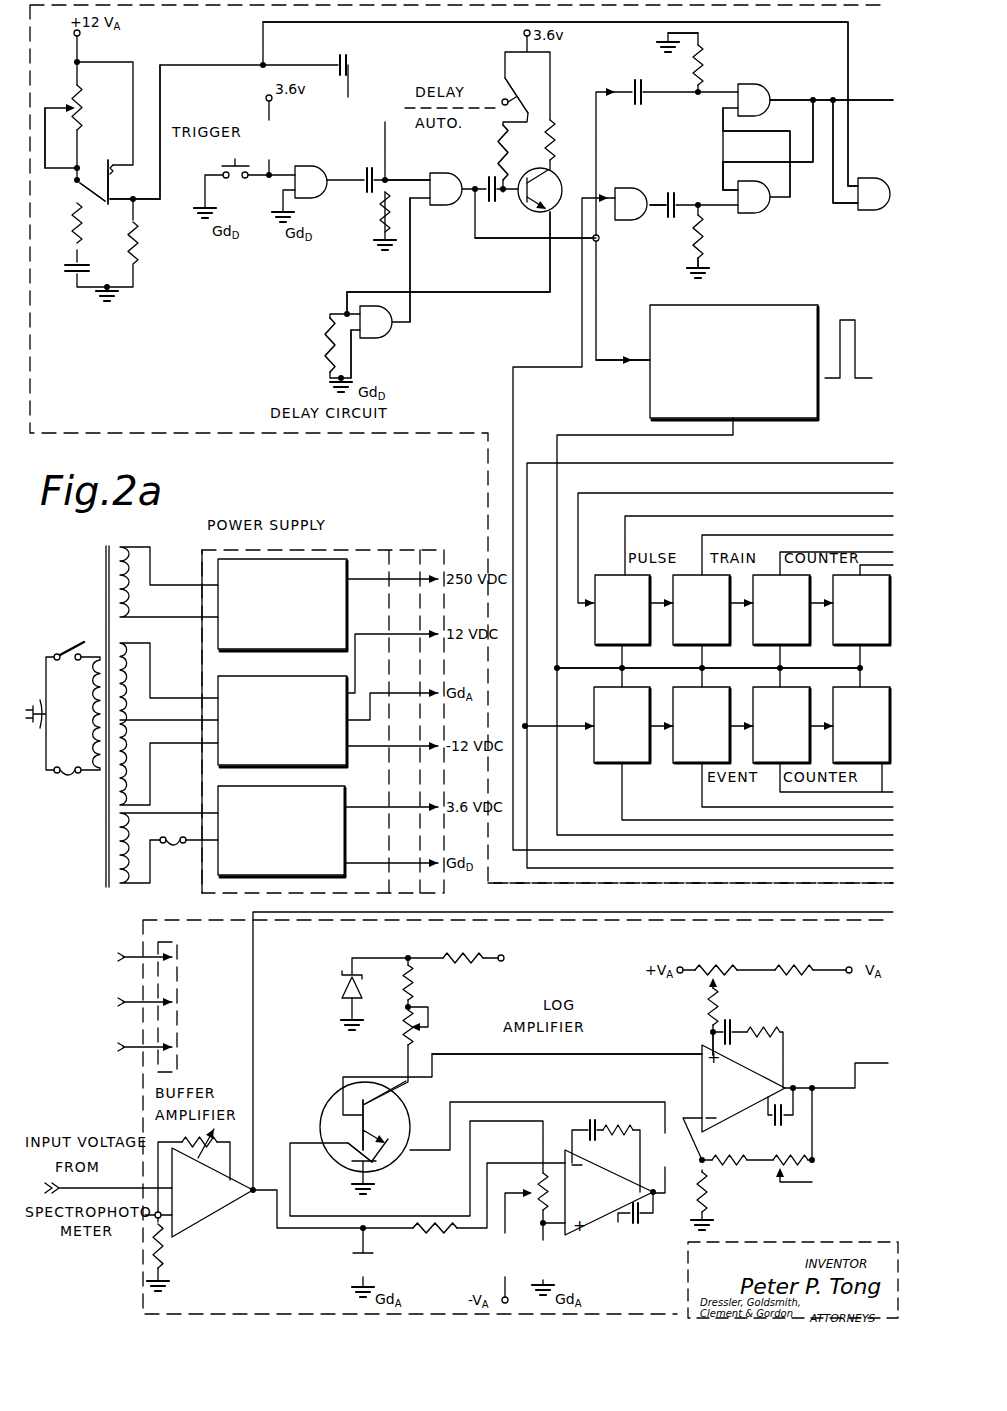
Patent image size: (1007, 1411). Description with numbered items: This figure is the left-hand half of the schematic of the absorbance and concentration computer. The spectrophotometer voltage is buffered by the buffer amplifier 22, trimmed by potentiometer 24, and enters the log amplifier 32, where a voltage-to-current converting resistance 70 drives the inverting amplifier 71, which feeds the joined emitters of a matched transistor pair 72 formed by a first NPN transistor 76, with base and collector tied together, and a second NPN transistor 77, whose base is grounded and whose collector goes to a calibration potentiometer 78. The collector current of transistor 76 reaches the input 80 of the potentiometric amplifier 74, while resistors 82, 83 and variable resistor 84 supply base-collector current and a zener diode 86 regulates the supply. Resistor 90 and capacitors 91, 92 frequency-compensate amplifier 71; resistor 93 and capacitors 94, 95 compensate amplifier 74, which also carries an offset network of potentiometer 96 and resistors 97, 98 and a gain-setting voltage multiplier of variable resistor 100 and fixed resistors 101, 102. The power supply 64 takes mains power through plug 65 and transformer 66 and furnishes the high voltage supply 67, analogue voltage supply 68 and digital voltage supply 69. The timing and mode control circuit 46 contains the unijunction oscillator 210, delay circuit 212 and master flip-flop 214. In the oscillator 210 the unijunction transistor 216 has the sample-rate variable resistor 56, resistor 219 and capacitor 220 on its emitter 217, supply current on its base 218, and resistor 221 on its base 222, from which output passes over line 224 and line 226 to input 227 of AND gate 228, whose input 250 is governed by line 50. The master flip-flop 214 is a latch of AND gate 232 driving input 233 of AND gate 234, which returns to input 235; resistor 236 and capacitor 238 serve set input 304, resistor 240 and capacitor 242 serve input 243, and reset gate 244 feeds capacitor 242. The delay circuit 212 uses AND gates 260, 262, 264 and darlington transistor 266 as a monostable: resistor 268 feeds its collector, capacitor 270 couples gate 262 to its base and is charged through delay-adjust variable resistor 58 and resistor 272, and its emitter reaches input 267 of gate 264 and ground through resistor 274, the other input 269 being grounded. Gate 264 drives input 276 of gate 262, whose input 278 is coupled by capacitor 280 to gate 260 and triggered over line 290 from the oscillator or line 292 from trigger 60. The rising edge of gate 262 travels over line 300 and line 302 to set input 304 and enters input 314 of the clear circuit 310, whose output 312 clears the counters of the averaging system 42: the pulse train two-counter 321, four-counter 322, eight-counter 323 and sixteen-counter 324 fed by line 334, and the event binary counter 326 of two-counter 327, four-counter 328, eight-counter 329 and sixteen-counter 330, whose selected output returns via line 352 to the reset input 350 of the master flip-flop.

The buffer amplifier 22 is at (210, 1206).
The potentiometer 24 is at (218, 1138).
The log amplifier 32 is at (582, 1055).
The averaging system 42 is at (818, 480).
The system timing and mode control circuit 46 is at (549, 298).
The line 50 is at (798, 96).
The variable resistor 56 is at (62, 107).
The variable resistor 58 is at (495, 92).
The trigger 60 is at (228, 157).
The system power supply 64 is at (450, 540).
The plug 65 is at (40, 698).
The transformer 66 is at (111, 548).
The high DC voltage supply 67 is at (340, 628).
The analogue DC voltage supply 68 is at (338, 690).
The digital DC voltage supply 69 is at (335, 796).
The voltage-to-current converting resistance 70 is at (440, 1240).
The inverting amplifier 71 is at (610, 1204).
The matched transistor pair 72 is at (413, 1117).
The potentiometric amplifier 74 is at (740, 1098).
The first NPN transistor 76 is at (342, 1113).
The second NPN transistor 77 is at (370, 1148).
The calibration potentiometer 78 is at (540, 1185).
The input of amplifier 80 is at (694, 1055).
The resistor 82 is at (472, 955).
The resistor 83 is at (420, 982).
The variable resistor 84 is at (406, 1029).
The zener diode 86 is at (340, 985).
The resistor 90 is at (618, 1128).
The capacitor 91 is at (590, 1128).
The capacitor 92 is at (636, 1226).
The resistor 93 is at (772, 1026).
The capacitor 94 is at (731, 1022).
The capacitor 95 is at (770, 1127).
The potentiometer 96 is at (716, 966).
The resistor 97 is at (793, 966).
The resistor 98 is at (708, 1006).
The variable resistor 100 is at (812, 1178).
The fixed resistor 101 is at (745, 1165).
The fixed resistor 102 is at (712, 1197).
The unijunction oscillator 210 is at (122, 109).
The delay circuit 212 is at (480, 283).
The master flip-flop 214 is at (702, 154).
The unijunction transistor 216 is at (118, 184).
The emitter 217 is at (92, 182).
The base 218 is at (122, 162).
The resistor 219 is at (72, 222).
The capacitor 220 is at (67, 274).
The resistor 221 is at (140, 262).
The base 222 is at (120, 208).
The line 224 is at (162, 102).
The line 226 is at (804, 27).
The input of AND gate 227 is at (848, 178).
The AND gate 228 is at (878, 212).
The AND gate 232 is at (764, 91).
The input of AND gate 233 is at (725, 190).
The AND gate 234 is at (762, 208).
The input of AND gate 235 is at (725, 108).
The resistor 236 is at (700, 60).
The capacitor 238 is at (636, 106).
The resistor 240 is at (700, 247).
The capacitor 242 is at (670, 220).
The input of gate 243 is at (722, 208).
The reset gate 244 is at (633, 214).
The input of gate 250 is at (847, 206).
The AND gate 260 is at (315, 170).
The AND gate 262 is at (452, 198).
The AND gate 264 is at (392, 330).
The darlington connection transistor 266 is at (550, 178).
The input of gate 267 is at (350, 305).
The resistor 268 is at (553, 135).
The input of gate 269 is at (352, 344).
The capacitor 270 is at (486, 205).
The resistor 272 is at (499, 160).
The resistor 274 is at (322, 341).
The input of gate 276 is at (422, 222).
The input of gate 278 is at (408, 178).
The capacitor 280 is at (362, 174).
The line 290 is at (337, 62).
The line 292 is at (340, 200).
The line 300 is at (563, 242).
The line 302 is at (691, 82).
The set input 304 is at (725, 90).
The clear circuit 310 is at (795, 310).
The output of clear circuit 312 is at (735, 428).
The input of clear circuit 314 is at (640, 358).
The 2-counter 321 is at (600, 640).
The 4-counter 322 is at (678, 640).
The 8-counter 323 is at (755, 640).
The 16-counter 324 is at (840, 640).
The event binary counter 326 is at (738, 700).
The 2-counter 327 is at (600, 760).
The 4-counter 328 is at (680, 760).
The 8-counter 329 is at (765, 760).
The 16-counter 330 is at (875, 762).
The line 334 is at (660, 498).
The reset input 350 is at (594, 188).
The line 352 is at (722, 872).